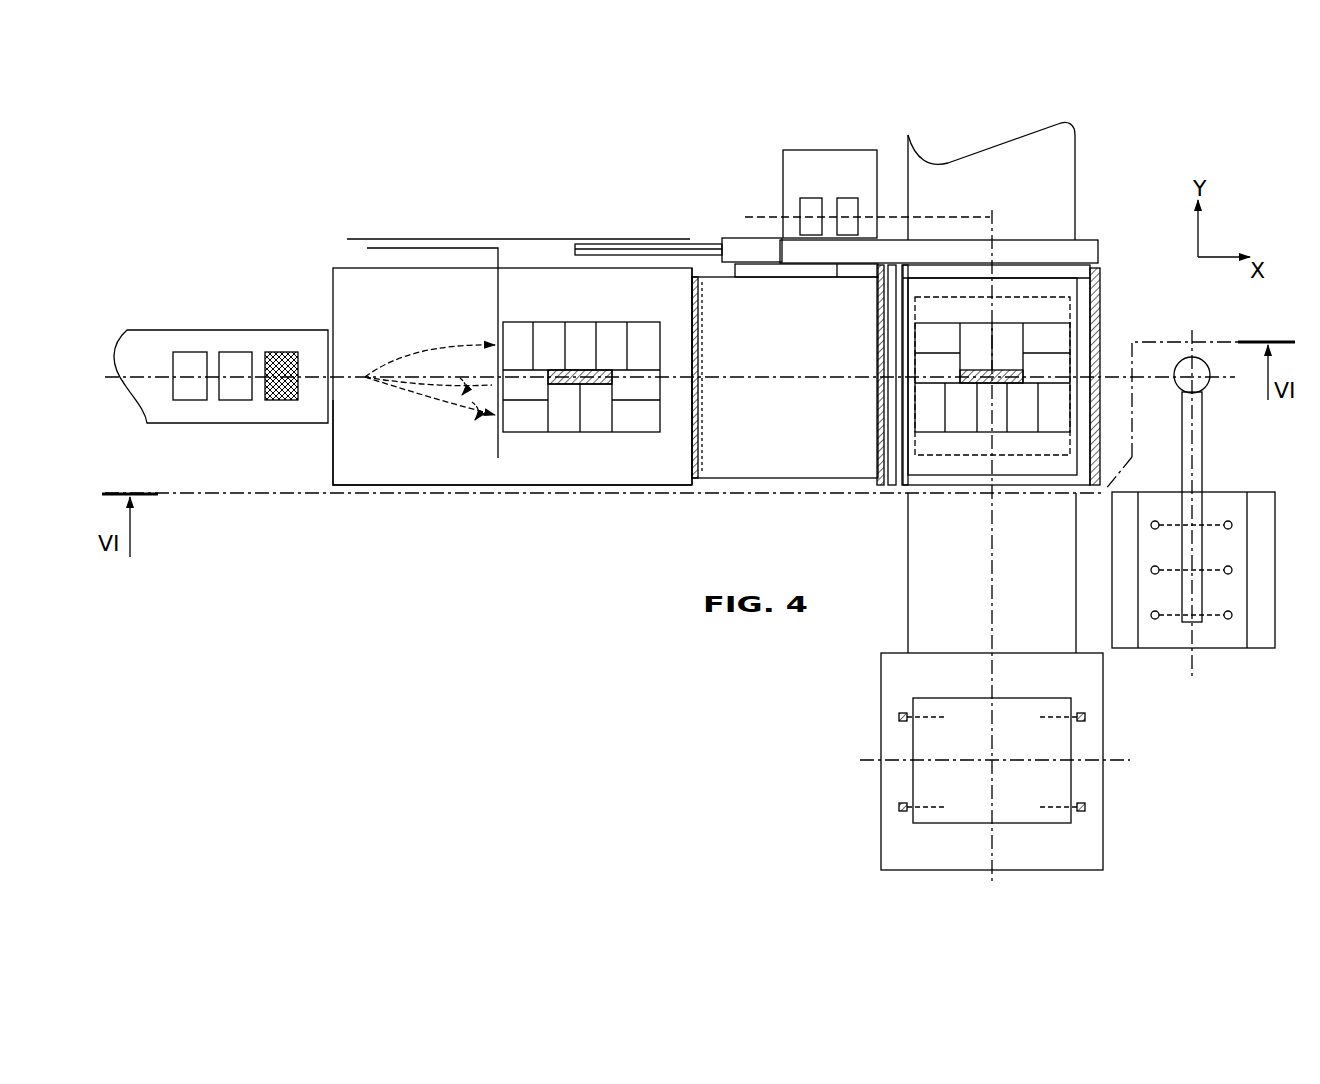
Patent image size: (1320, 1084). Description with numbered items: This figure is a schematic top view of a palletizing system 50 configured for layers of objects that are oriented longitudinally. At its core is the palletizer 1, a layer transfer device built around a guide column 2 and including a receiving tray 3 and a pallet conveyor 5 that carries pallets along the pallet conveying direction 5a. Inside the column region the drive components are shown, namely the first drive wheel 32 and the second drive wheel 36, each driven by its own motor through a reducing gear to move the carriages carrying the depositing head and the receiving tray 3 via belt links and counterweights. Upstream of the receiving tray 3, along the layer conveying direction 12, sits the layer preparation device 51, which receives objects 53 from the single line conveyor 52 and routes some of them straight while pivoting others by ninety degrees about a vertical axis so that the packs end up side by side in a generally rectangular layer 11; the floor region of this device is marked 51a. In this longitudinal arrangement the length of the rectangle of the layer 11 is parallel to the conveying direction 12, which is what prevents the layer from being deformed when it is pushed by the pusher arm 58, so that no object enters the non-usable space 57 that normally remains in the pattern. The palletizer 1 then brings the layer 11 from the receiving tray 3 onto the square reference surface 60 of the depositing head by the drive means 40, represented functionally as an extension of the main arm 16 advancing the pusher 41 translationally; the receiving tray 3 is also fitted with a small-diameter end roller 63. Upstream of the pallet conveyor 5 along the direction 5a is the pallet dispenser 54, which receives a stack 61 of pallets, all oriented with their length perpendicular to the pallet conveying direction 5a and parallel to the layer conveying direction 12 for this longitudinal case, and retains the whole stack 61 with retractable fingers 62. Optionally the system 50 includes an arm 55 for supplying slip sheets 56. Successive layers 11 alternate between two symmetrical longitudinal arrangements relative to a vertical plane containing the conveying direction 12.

The palletizer 1 is at (718, 188).
The guide column 2 is at (795, 145).
The receiving tray 3 is at (803, 433).
The pallet conveyor 5 is at (1077, 208).
The pallet conveying direction 5a is at (993, 210).
The layer 11 is at (603, 435).
The layer conveying direction 12 is at (665, 380).
The main arm 16 is at (1080, 254).
The first drive wheel 32 is at (848, 208).
The second drive wheel 36 is at (812, 207).
The drive means 40 is at (617, 247).
The pusher 41 is at (700, 310).
The palletizing system 50 is at (555, 612).
The layer preparation device 51 is at (417, 457).
The bottom of setup station 51a is at (480, 470).
The single line conveyor 52 is at (215, 405).
The objects 53 is at (190, 365).
The pallet dispenser 54 is at (1078, 845).
The arm 55 is at (1195, 458).
The slip sheets 56 is at (1220, 633).
The non-usable space 57 is at (572, 385).
The pusher arm 58 is at (498, 283).
The reference surface 60 is at (1075, 305).
The stack of pallets 61 is at (1035, 798).
The retractable fingers 62 is at (1082, 722).
The end roller 63 is at (887, 455).